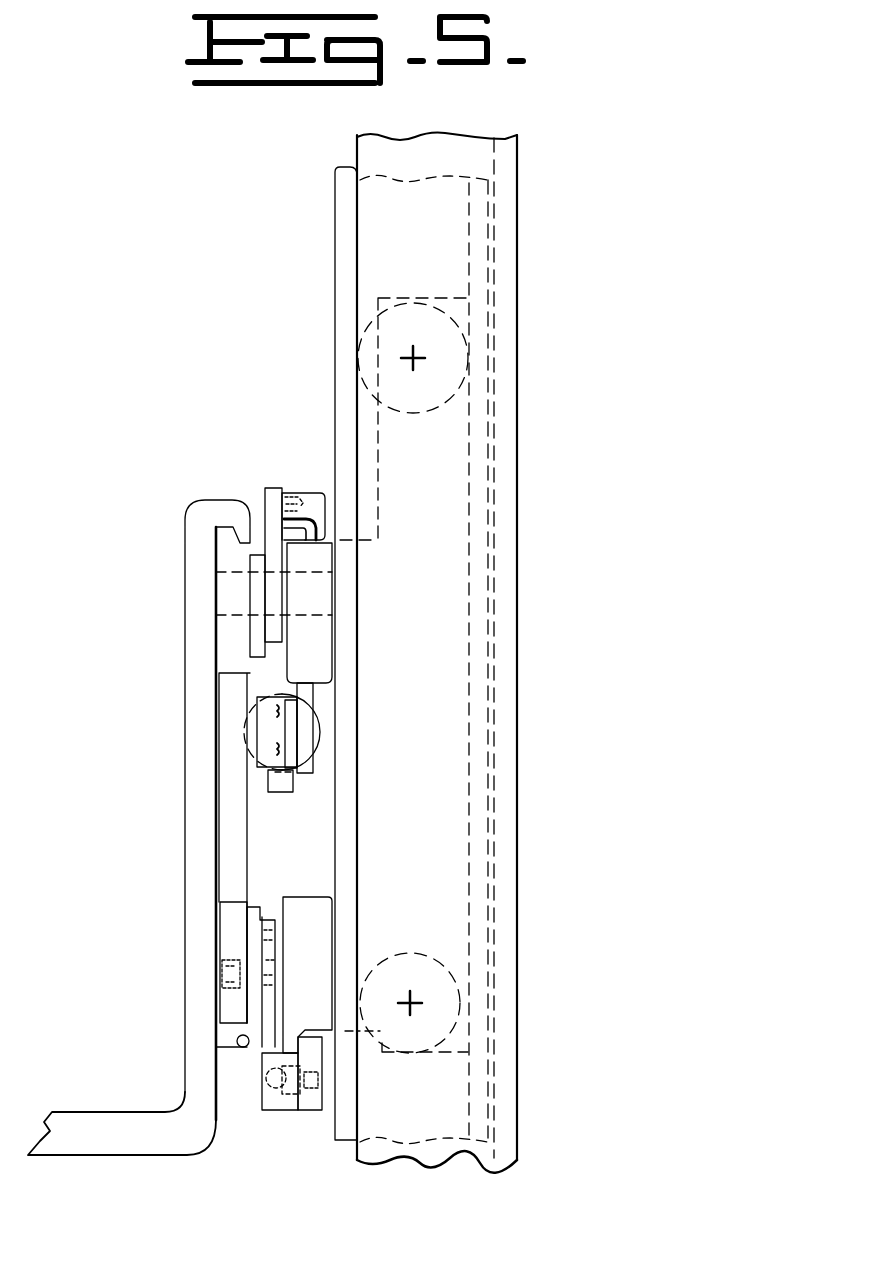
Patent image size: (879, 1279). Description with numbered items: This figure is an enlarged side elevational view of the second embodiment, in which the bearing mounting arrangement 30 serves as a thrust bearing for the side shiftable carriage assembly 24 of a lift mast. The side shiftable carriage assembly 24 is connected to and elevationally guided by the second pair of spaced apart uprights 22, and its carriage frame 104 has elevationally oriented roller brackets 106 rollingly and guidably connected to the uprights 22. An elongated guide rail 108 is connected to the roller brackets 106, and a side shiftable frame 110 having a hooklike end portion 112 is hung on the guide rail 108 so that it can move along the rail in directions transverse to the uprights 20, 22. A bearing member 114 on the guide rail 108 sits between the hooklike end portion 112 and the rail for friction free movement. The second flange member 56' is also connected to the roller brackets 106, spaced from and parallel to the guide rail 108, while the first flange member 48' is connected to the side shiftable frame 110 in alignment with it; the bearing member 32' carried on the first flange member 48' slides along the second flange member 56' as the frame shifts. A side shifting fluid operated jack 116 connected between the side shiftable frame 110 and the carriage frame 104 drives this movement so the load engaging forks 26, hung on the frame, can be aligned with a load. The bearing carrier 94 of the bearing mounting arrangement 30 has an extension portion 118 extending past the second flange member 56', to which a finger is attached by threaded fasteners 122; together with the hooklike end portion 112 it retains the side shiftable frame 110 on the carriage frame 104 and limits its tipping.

The uprights 20 is at (517, 226).
The second pair of spaced apart uprights 22 is at (342, 258).
The side shiftable carriage assembly 24 is at (223, 485).
The load engaging forks 26 is at (188, 750).
The bearing mounting arrangement 30 is at (190, 1010).
The bearing member 32' is at (354, 957).
The first flange member 48' is at (182, 962).
The second flange member 56' is at (205, 942).
The bearing carrier 94 is at (262, 1050).
The carriage frame 104 is at (287, 661).
The roller brackets 106 is at (470, 405).
The elongated guide rail 108 is at (313, 563).
The side shiftable frame 110 is at (217, 603).
The hooklike end portion 112 is at (307, 493).
The bearing member 114 is at (312, 530).
The side shifting fluid operated jack 116 is at (320, 742).
The extension portion 118 is at (273, 1112).
The threaded fasteners 122 is at (276, 1082).